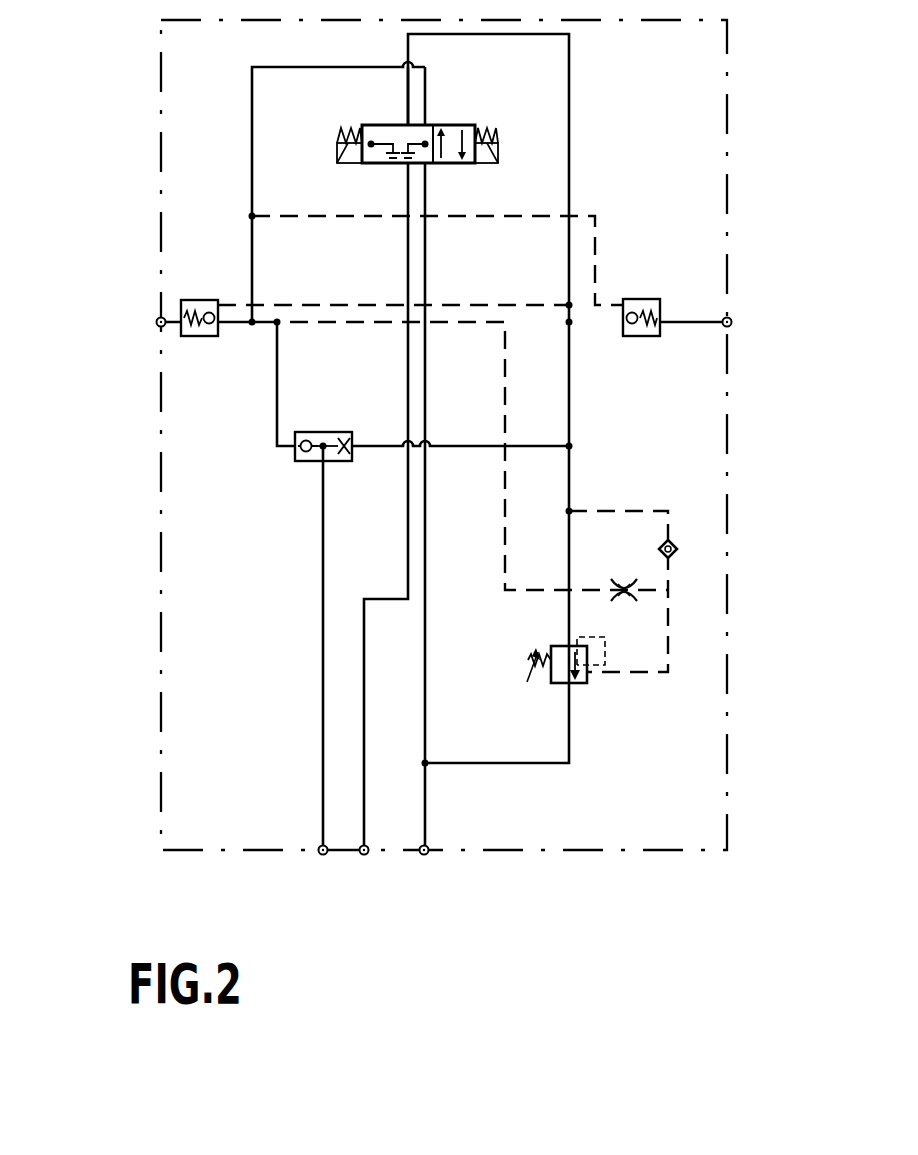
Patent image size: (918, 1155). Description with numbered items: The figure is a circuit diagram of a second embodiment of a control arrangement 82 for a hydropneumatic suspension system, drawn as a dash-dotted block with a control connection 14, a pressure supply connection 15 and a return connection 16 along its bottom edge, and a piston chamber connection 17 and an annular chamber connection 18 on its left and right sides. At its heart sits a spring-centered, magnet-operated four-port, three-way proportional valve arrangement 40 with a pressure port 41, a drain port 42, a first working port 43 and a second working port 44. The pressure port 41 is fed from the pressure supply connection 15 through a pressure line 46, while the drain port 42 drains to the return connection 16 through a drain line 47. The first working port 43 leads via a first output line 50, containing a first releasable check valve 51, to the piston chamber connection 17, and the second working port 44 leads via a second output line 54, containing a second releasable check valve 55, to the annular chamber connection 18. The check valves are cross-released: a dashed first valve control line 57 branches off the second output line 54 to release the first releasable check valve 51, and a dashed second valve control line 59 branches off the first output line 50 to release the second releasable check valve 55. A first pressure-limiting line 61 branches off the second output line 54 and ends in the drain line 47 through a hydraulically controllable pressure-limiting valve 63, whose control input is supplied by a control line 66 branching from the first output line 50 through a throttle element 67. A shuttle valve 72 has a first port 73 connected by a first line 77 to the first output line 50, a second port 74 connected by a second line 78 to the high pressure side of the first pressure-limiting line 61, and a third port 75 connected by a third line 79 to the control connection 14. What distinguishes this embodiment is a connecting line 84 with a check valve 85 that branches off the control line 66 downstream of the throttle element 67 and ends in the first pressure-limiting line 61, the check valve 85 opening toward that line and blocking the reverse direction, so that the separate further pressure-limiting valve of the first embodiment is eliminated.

The control connection 14 is at (327, 855).
The pressure supply connection 15 is at (368, 855).
The return connection 16 is at (428, 855).
The piston chamber connection 17 is at (157, 327).
The annular chamber connection 18 is at (731, 327).
The valve arrangement 40 is at (520, 141).
The pressure port 41 is at (405, 165).
The drain port 42 is at (428, 165).
The first working port 43 is at (428, 124).
The second working port 44 is at (405, 124).
The pressure line 46 is at (365, 648).
The drain line 47 is at (427, 648).
The first output line 50 is at (251, 195).
The first releasable check valve 51 is at (199, 299).
The second output line 54 is at (570, 190).
The second releasable check valve 55 is at (640, 298).
The first valve control line 57 is at (288, 304).
The second valve control line 59 is at (288, 215).
The first pressure-limiting line 61 is at (571, 404).
The hydraulically controllable pressure-limiting valve 63 is at (549, 643).
The control line 66 is at (503, 535).
The throttle element 67 is at (624, 582).
The shuttle valve 72 is at (326, 428).
The first port 73 is at (297, 456).
The second port 74 is at (349, 462).
The third port 75 is at (321, 462).
The first line 77 is at (275, 385).
The second line 78 is at (356, 437).
The third line 79 is at (321, 538).
The control arrangement 82 is at (158, 592).
The connecting line 84 is at (640, 510).
The check valve 85 is at (680, 548).